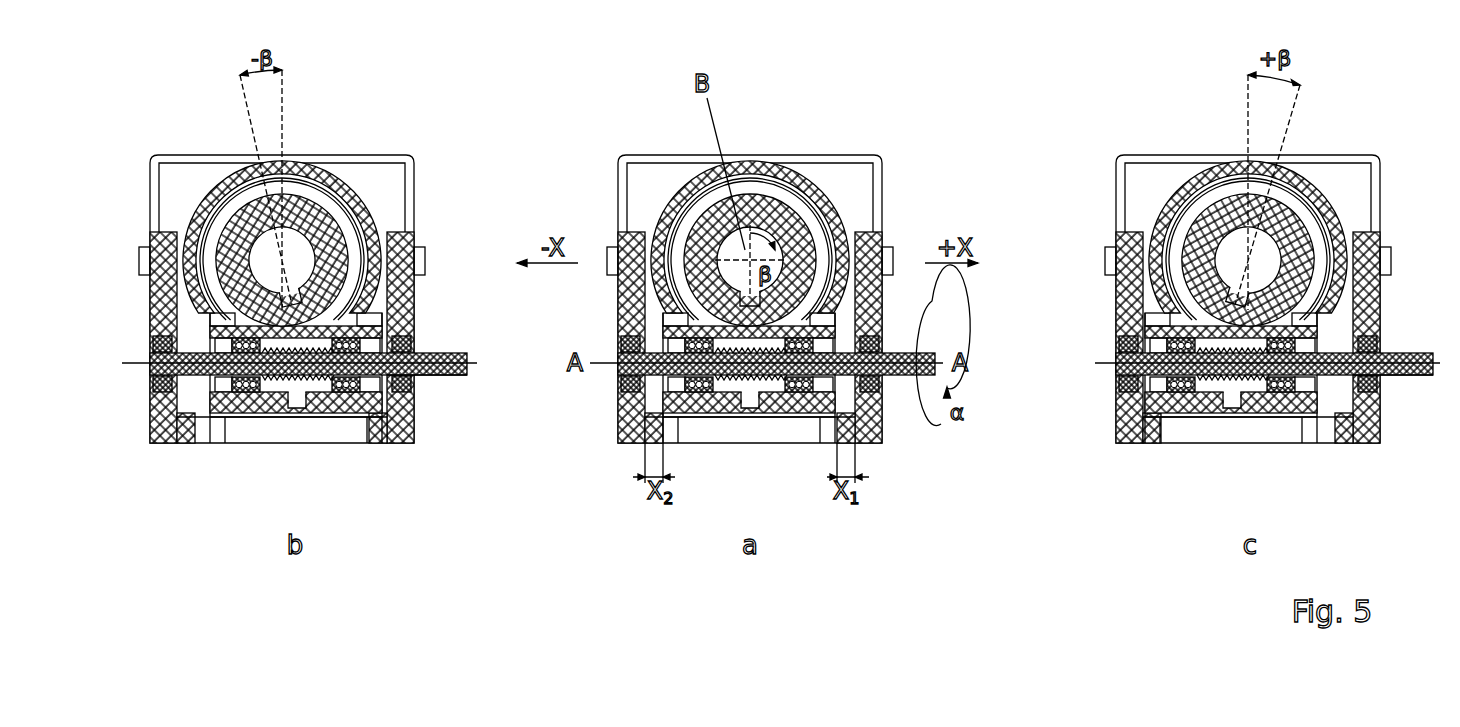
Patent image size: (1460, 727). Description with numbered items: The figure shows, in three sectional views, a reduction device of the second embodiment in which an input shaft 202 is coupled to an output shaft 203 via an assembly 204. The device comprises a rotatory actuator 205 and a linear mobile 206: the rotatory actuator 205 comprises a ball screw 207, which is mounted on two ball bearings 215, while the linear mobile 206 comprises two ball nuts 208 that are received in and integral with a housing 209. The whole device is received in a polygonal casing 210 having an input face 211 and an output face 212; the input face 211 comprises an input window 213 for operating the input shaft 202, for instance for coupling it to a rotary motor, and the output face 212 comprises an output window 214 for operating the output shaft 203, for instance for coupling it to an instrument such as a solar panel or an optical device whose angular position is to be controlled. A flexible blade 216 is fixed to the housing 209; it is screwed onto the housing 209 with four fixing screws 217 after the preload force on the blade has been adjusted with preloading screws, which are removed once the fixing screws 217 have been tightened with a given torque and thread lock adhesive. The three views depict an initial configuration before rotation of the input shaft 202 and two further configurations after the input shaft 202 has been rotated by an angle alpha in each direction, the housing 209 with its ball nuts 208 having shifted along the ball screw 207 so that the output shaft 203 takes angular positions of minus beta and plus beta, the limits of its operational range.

The input shaft 202 is at (911, 377).
The output shaft 203 is at (755, 237).
The assembly 204 is at (688, 362).
The rotatory actuator 205 is at (895, 377).
The linear mobile 206 is at (835, 335).
The ball screw 207 is at (840, 377).
The ball nuts 208 is at (815, 388).
The housing 209 is at (693, 398).
The casing 210 is at (632, 155).
The input face 211 is at (882, 170).
The output face 212 is at (635, 207).
The input window 213 is at (885, 383).
The output window 214 is at (692, 187).
The ball bearings 215 is at (876, 342).
The flexible blade 216 is at (820, 300).
The fixing screws 217 is at (675, 305).